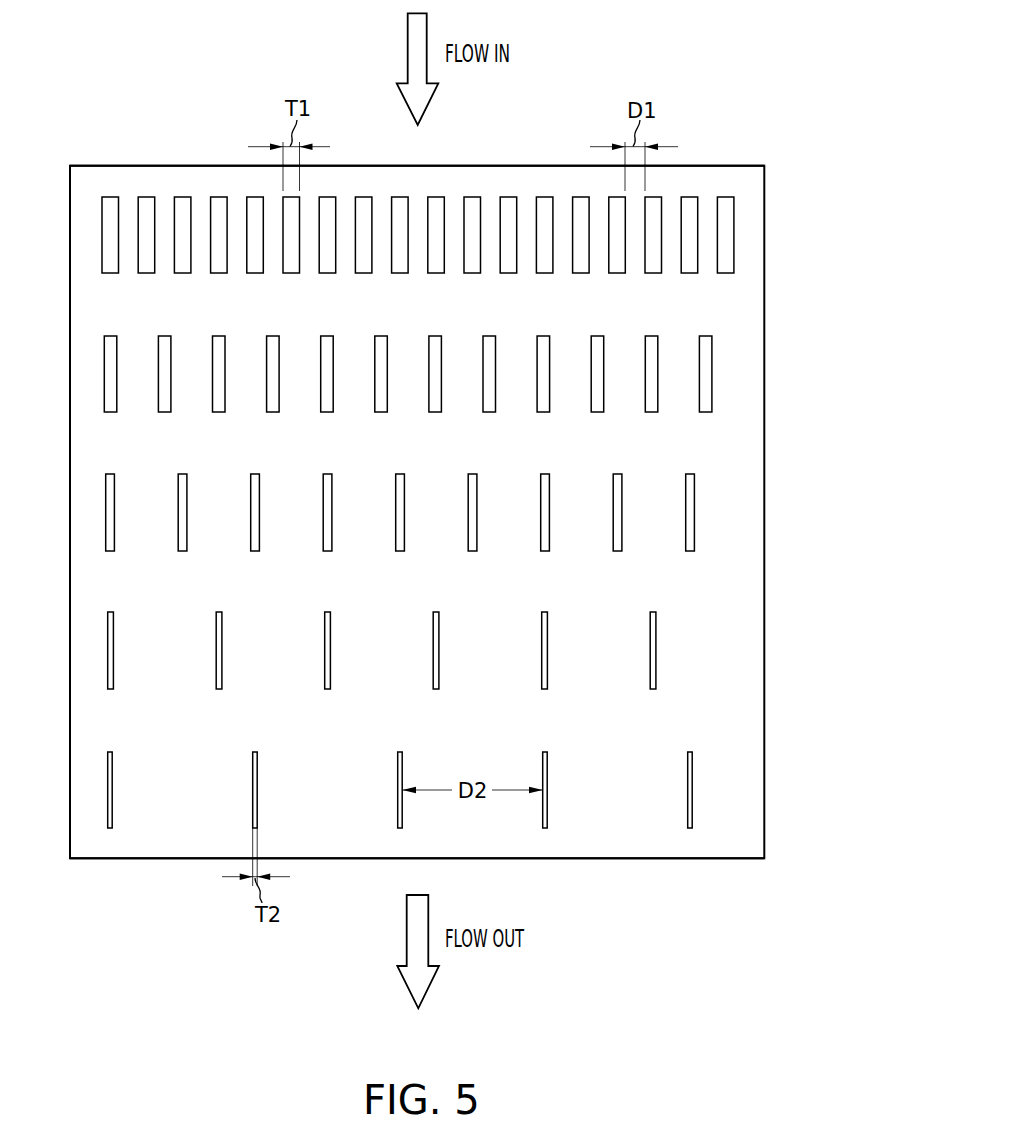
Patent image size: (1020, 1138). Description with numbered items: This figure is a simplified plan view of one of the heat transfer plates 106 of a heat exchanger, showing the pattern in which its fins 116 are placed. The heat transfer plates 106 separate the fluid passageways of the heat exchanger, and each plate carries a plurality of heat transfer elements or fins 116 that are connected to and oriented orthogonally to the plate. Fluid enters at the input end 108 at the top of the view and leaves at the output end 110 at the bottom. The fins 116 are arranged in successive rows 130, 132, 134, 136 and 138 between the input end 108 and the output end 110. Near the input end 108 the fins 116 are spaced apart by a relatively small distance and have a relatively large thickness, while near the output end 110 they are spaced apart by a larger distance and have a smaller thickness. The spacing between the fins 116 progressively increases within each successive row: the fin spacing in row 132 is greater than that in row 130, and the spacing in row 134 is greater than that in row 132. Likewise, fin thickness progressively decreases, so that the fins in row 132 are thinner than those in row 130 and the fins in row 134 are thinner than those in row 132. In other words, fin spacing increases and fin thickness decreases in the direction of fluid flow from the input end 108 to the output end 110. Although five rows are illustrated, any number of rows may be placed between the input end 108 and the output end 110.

The heat transfer plate 106 is at (764, 427).
The input end 108 is at (187, 165).
The output end 110 is at (187, 858).
The fins 116 is at (478, 512).
The row 130 is at (742, 230).
The row 132 is at (742, 366).
The row 134 is at (742, 502).
The row 136 is at (742, 644).
The row 138 is at (742, 784).